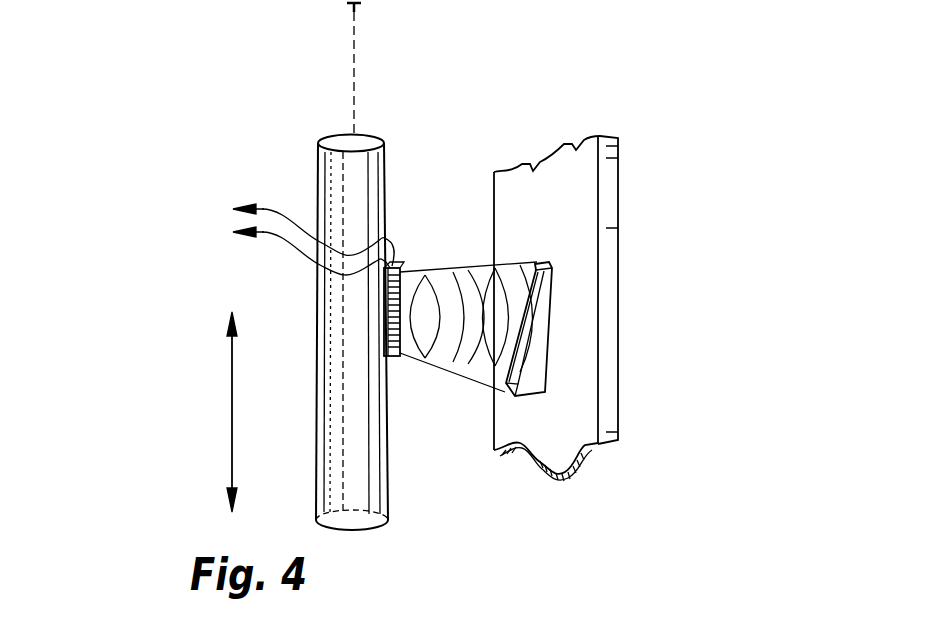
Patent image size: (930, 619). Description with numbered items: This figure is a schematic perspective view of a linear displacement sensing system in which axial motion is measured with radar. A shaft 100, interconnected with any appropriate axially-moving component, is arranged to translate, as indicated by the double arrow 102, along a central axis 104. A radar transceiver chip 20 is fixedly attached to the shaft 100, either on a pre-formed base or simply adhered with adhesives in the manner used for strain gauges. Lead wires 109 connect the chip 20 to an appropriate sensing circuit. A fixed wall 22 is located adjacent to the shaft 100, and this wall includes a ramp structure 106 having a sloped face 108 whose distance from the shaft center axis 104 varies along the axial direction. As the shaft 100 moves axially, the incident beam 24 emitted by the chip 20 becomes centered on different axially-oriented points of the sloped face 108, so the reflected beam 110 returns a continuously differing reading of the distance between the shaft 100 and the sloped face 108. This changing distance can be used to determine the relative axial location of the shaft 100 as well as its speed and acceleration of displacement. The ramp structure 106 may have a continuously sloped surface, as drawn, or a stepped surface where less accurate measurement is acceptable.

The radar transceiver chip 20 is at (390, 358).
The fixed wall 22 is at (544, 453).
The incident beam 24 is at (438, 358).
The shaft 100 is at (384, 455).
The double arrow 102 is at (232, 420).
The central axis 104 is at (354, 66).
The ramp structure 106 is at (541, 316).
The sloped face 108 is at (539, 376).
The lead wires 109 is at (269, 232).
The reflected beam 110 is at (487, 280).